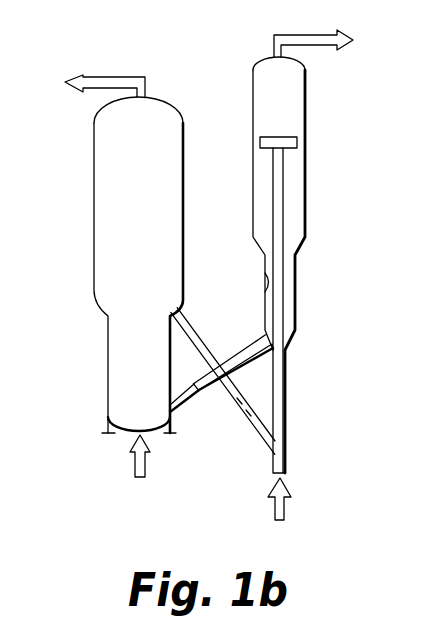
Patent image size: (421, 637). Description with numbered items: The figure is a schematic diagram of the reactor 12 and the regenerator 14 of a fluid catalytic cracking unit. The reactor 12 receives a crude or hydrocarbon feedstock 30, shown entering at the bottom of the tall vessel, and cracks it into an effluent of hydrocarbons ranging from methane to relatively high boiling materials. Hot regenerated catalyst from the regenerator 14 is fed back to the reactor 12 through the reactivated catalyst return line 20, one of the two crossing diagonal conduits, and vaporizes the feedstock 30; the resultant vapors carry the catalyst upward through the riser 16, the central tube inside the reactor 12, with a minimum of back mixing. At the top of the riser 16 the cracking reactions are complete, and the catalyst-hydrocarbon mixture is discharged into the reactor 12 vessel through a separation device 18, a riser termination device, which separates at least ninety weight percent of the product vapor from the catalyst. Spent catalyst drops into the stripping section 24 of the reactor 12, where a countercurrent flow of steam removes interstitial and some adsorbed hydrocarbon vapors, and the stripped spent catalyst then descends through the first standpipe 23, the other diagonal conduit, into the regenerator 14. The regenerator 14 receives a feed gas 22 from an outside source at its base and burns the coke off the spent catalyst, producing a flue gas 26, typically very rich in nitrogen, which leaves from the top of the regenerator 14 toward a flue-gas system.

The reactor 12 is at (306, 88).
The regenerator 14 is at (184, 141).
The riser 16 is at (273, 198).
The separation device 18 is at (298, 143).
The reactivated catalyst return line 20 is at (206, 333).
The feed gas 22 is at (130, 463).
The first standpipe 23 is at (213, 385).
The stripping section 24 is at (265, 273).
The flue gas 26 is at (76, 75).
The hydrocarbon feedstock 30 is at (285, 507).